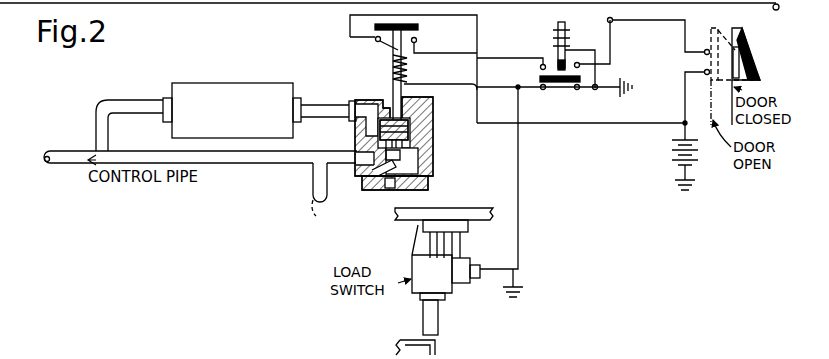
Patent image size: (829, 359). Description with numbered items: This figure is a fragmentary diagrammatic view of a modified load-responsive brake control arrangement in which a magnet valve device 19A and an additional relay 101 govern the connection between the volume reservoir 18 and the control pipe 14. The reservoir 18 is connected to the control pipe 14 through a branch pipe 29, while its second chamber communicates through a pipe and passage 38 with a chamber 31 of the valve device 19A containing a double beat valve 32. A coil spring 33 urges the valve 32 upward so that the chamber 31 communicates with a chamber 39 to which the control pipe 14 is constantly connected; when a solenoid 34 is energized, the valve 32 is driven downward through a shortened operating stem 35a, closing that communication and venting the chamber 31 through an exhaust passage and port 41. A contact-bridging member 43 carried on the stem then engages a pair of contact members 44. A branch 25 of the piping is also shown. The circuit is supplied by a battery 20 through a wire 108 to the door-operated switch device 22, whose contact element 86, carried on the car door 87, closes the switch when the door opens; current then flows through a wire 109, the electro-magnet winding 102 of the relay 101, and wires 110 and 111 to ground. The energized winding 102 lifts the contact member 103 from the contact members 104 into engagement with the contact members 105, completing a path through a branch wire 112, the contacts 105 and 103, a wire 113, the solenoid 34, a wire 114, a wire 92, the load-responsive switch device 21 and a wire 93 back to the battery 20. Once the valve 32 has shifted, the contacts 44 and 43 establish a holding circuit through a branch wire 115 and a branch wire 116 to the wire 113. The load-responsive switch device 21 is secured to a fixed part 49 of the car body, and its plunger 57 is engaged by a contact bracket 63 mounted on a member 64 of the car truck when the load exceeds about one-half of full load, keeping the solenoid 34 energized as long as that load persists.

The control pipe 14 is at (70, 153).
The volume reservoir 18 is at (198, 82).
The magnet valve device 19A is at (392, 193).
The battery 20 is at (683, 143).
The load-responsive switch device 21 is at (409, 258).
The door-operated switch device 22 is at (705, 50).
The branch pipe 25 is at (313, 182).
The branch pipe 29 is at (110, 103).
The chamber 31 is at (416, 134).
The double beat valve 32 is at (420, 117).
The coil spring 33 is at (412, 176).
The solenoid 34 is at (391, 68).
The operating stem 35a is at (373, 98).
The pipe and passage 38 is at (322, 109).
The chamber 39 is at (406, 156).
The exhaust passage and port 41 is at (424, 102).
The contact-bridging member 43 is at (418, 28).
The contact members 44 is at (382, 43).
The fixed part of the car body 49 is at (428, 216).
The plunger 57 is at (439, 324).
The contact bracket 63 is at (436, 348).
The member of the car truck 64 is at (394, 353).
The contact element 86 is at (744, 46).
The car door 87 is at (741, 69).
The wire 92 is at (518, 181).
The wire 93 is at (514, 270).
The relay 101 is at (556, 30).
The electro-magnet winding 102 is at (566, 28).
The contact member 103 is at (540, 78).
The contact members 104 is at (577, 91).
The contact members 105 is at (553, 62).
The wire 108 is at (684, 103).
The wire 109 is at (668, 22).
The wire 110 is at (600, 81).
The wire 111 is at (612, 88).
The branch wire 112 is at (611, 58).
The wire 113 is at (510, 52).
The wire 114 is at (424, 85).
The branch wire 115 is at (609, 128).
The branch wire 116 is at (418, 42).